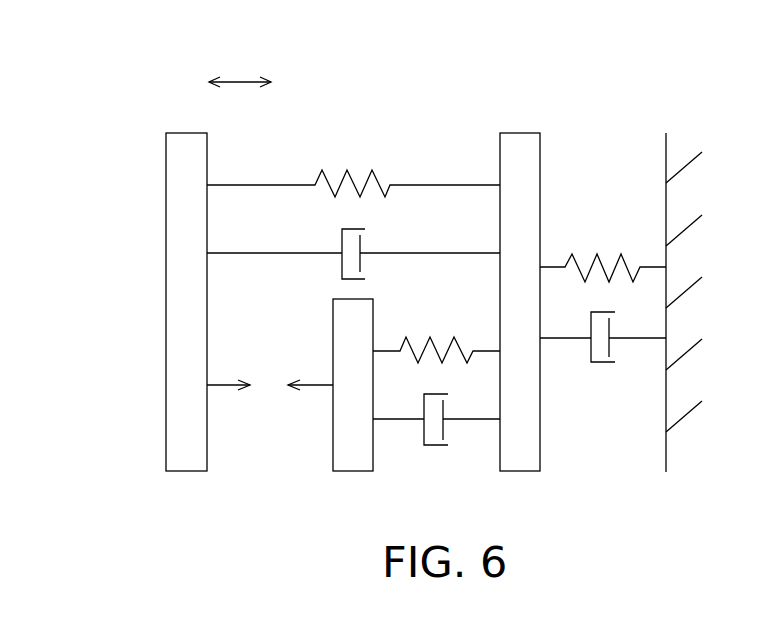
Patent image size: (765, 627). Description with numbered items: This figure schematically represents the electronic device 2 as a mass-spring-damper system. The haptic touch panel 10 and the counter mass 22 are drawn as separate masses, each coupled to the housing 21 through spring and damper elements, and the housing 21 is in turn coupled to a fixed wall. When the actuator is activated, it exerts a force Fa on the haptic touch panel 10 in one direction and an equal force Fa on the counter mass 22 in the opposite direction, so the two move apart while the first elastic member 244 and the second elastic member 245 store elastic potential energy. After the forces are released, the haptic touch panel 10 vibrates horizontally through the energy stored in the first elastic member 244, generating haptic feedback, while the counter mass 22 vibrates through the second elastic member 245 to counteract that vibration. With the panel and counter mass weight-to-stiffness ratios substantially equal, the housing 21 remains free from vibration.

The electronic device 2 is at (56, 57).
The haptic touch panel 10 is at (176, 326).
The housing 21 is at (519, 145).
The counter mass 22 is at (354, 463).
The first elastic member 244 is at (356, 143).
The second elastic member 245 is at (441, 455).